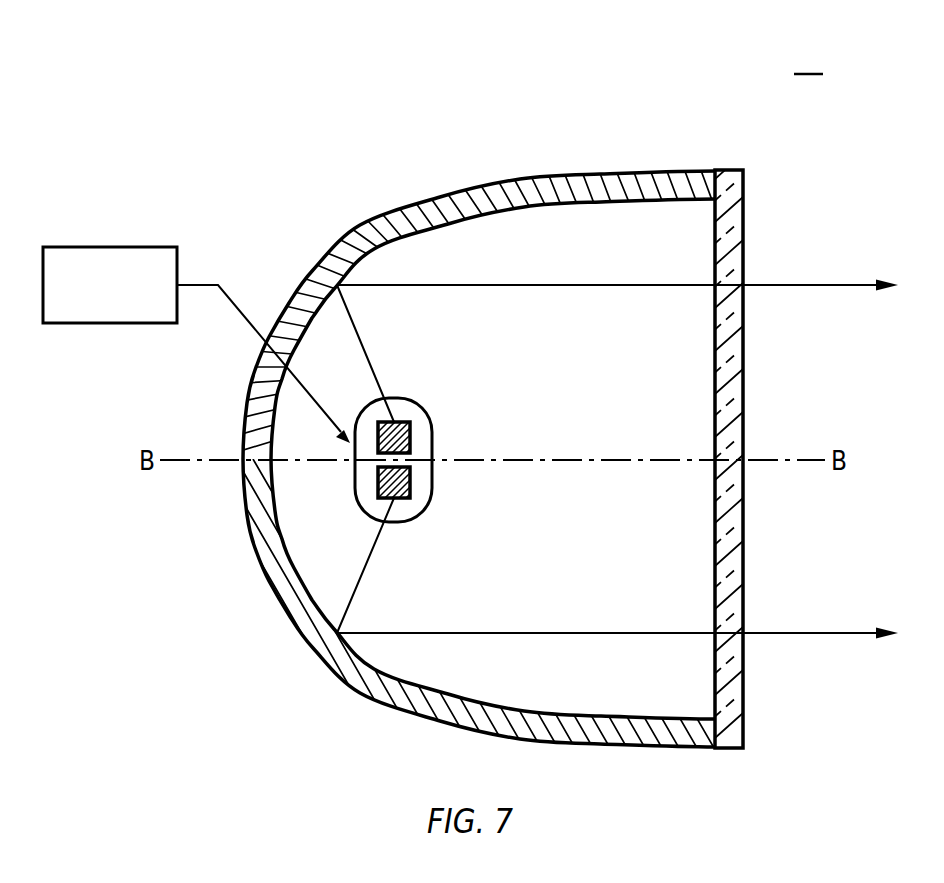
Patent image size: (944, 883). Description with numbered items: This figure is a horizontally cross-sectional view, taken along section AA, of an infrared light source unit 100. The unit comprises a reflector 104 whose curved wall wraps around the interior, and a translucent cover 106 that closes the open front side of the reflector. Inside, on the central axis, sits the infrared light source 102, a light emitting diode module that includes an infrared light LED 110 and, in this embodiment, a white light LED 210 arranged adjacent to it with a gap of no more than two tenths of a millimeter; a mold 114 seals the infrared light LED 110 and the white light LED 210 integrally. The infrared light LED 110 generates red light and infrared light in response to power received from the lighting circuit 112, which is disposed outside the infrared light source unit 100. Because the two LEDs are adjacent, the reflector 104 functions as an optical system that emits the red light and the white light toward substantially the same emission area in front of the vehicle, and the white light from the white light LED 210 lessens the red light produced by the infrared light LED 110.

The infrared light source unit 100 is at (831, 31).
The infrared light source 102 is at (431, 388).
The reflector 104 is at (578, 172).
The translucent cover 106 is at (745, 372).
The infrared light LED 110 is at (412, 437).
The lighting circuit 112 is at (110, 246).
The mold 114 is at (413, 517).
The white light LED 210 is at (412, 481).